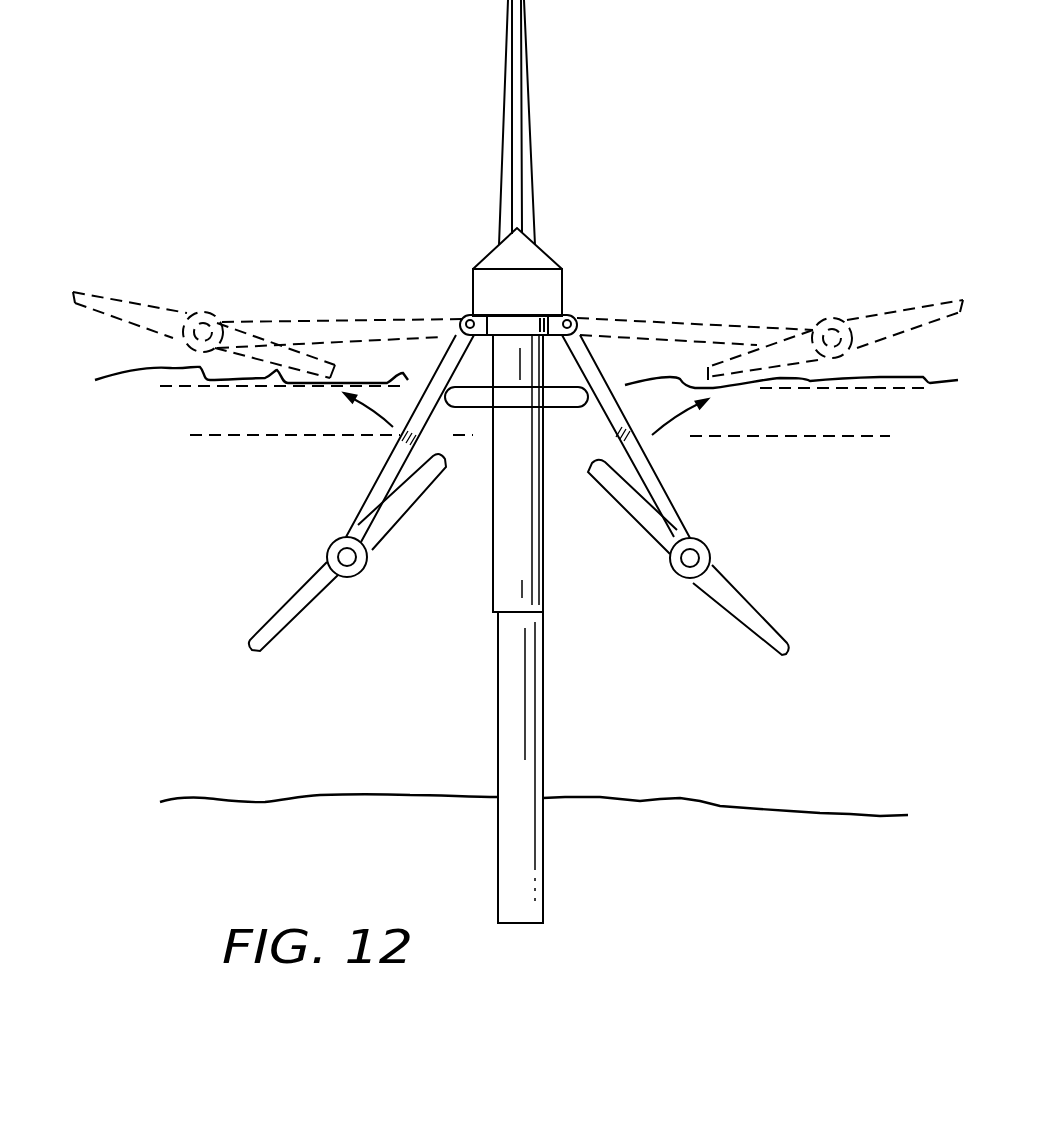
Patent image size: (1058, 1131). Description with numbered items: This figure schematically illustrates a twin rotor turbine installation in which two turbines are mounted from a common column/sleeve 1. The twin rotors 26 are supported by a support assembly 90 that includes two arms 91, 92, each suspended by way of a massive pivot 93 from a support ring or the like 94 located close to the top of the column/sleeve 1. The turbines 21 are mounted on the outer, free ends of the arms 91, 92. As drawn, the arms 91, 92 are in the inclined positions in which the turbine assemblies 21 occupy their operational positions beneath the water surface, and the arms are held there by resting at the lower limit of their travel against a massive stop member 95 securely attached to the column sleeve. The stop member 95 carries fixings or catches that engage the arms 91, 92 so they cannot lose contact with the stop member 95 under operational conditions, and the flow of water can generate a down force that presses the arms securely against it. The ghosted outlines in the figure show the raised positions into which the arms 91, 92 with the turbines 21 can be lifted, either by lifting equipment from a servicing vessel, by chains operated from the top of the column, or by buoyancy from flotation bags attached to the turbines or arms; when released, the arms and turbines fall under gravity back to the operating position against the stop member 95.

The column/sleeve 1 is at (535, 735).
The turbine 21 is at (362, 572).
The rotor 26 is at (318, 603).
The support assembly 90 is at (568, 252).
The arm 91 is at (377, 473).
The arm 92 is at (655, 478).
The pivot 93 is at (462, 322).
The support ring 94 is at (512, 325).
The stop member 95 is at (570, 398).